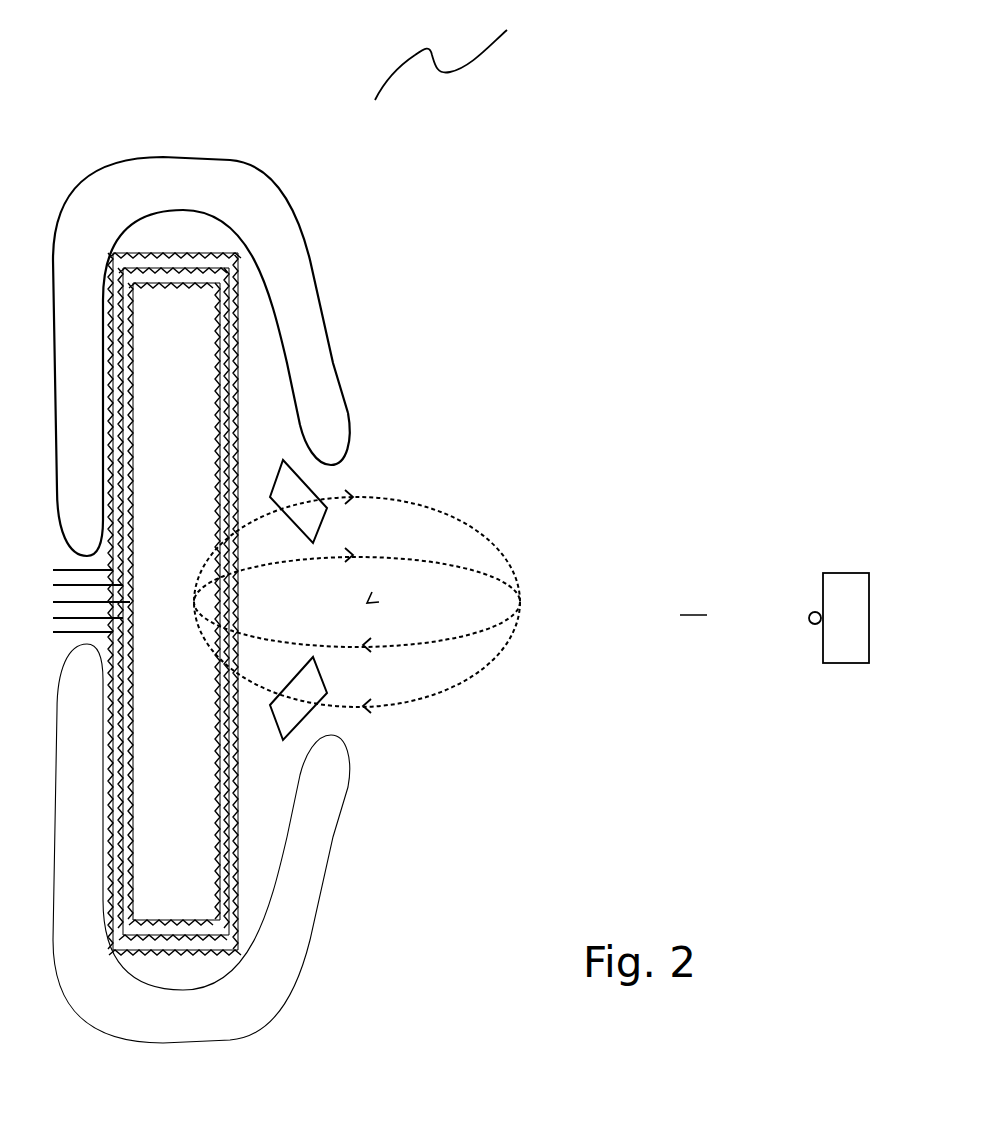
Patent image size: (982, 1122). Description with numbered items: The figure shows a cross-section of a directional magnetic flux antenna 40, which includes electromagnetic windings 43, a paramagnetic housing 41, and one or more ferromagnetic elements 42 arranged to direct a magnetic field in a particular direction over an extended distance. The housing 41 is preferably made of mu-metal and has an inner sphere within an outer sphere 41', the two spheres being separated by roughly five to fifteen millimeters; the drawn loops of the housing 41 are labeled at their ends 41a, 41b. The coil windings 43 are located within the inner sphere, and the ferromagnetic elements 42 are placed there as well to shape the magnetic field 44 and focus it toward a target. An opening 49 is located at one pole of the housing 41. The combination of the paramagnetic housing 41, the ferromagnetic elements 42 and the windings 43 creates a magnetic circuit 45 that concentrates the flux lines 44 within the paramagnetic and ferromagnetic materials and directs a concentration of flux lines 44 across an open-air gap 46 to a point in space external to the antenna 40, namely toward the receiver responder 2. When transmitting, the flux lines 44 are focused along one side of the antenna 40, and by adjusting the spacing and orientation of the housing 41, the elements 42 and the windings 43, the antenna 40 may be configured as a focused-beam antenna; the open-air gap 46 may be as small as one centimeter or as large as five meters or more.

The directional magnetic flux antenna 40 is at (243, 158).
The paramagnetic housing 41 is at (244, 319).
The outer sphere 41' is at (200, 319).
The tip end of upper loop 41a is at (335, 443).
The lower loop 41b is at (332, 757).
The ferromagnetic elements 42 is at (283, 485).
The electromagnetic windings 43 is at (220, 438).
The magnetic field 44 is at (465, 685).
The magnetic circuit 45 is at (451, 54).
The open-air gap 46 is at (693, 604).
The opening 49 is at (367, 603).
The receiver responder 2 is at (857, 618).